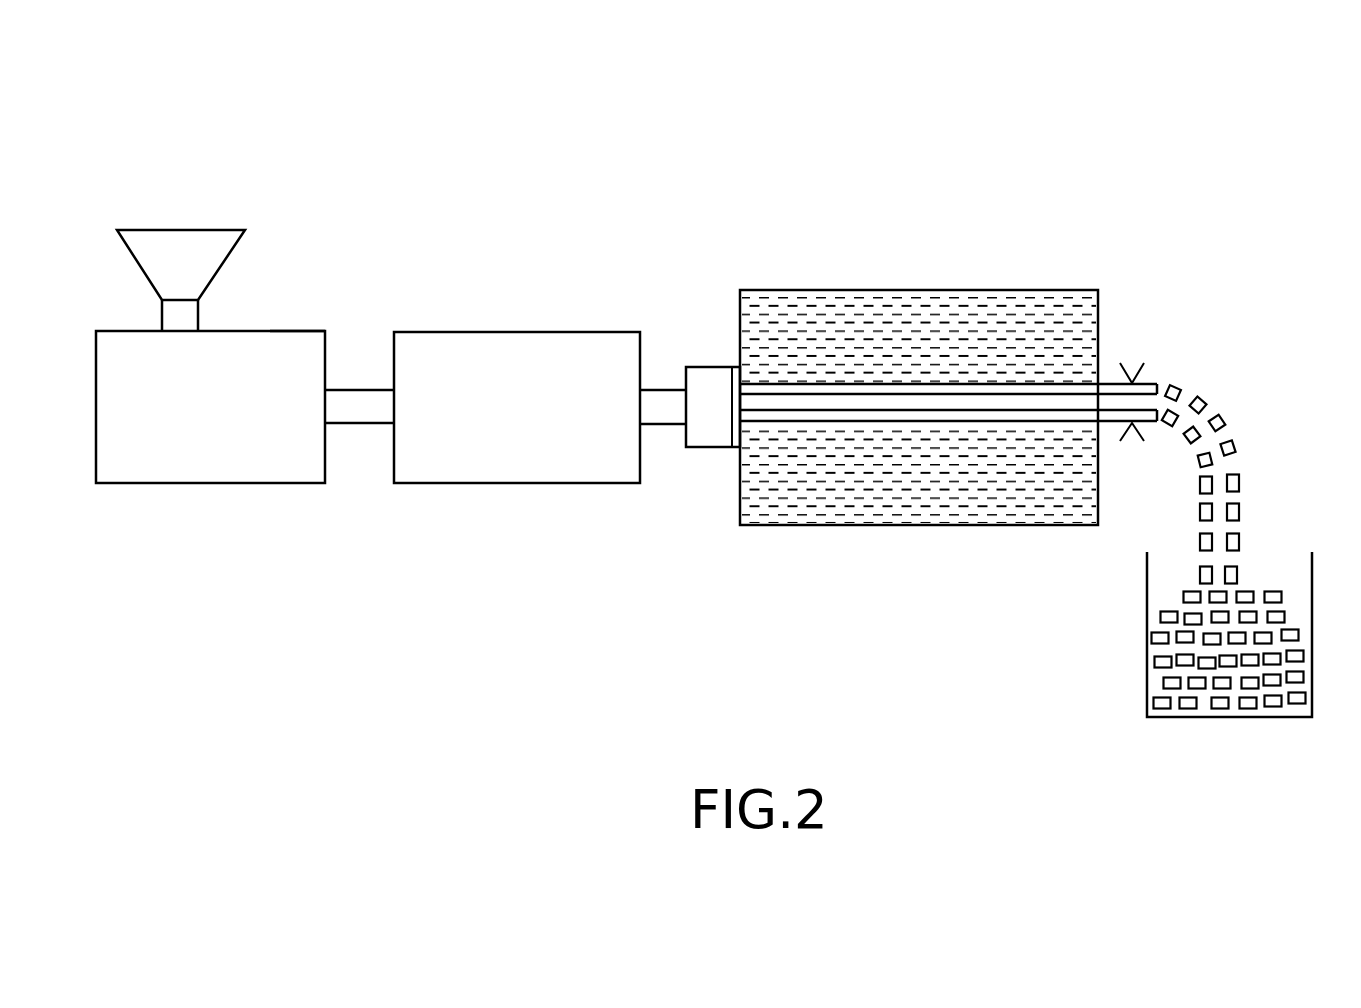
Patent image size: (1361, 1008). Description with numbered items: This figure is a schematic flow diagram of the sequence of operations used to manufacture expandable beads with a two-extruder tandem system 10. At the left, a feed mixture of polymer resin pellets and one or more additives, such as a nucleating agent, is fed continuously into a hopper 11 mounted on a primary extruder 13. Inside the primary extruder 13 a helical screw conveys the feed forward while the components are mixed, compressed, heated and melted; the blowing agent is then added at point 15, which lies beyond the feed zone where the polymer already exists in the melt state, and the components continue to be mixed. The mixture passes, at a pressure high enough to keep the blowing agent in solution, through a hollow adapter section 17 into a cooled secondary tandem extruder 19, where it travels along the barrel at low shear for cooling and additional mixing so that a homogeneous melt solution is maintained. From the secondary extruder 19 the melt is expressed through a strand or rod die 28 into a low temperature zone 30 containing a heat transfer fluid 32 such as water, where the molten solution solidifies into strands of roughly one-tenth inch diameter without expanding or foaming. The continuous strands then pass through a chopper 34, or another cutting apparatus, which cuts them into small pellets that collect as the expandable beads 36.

The two-extruder tandem system 10 is at (640, 587).
The hopper 11 is at (190, 228).
The primary extruder 13 is at (208, 483).
The blowing agent injection point 15 is at (283, 330).
The hollow adapter section 17 is at (360, 390).
The cooled secondary tandem extruder 19 is at (513, 483).
The strand or rod die 28 is at (712, 367).
The low temperature zone 30 is at (919, 344).
The heat transfer fluid 32 is at (1008, 325).
The chopper 34 is at (1132, 383).
The expandable beads 36 is at (1237, 483).